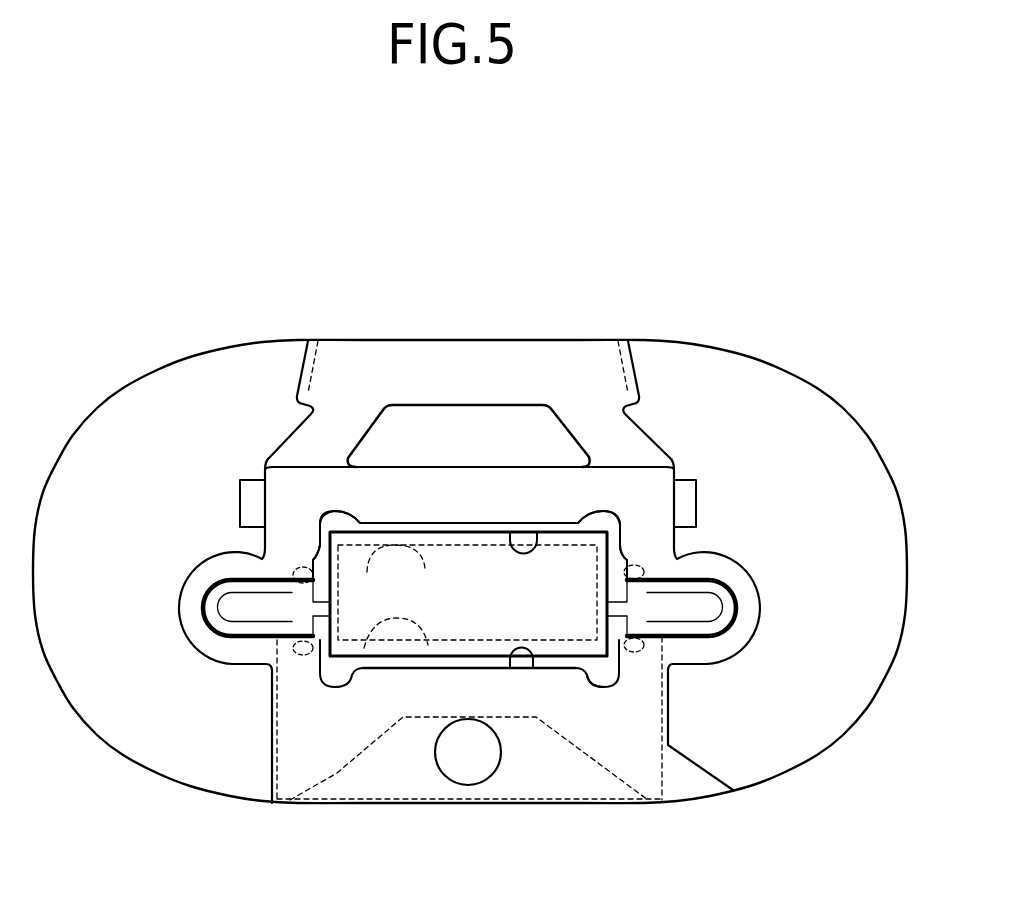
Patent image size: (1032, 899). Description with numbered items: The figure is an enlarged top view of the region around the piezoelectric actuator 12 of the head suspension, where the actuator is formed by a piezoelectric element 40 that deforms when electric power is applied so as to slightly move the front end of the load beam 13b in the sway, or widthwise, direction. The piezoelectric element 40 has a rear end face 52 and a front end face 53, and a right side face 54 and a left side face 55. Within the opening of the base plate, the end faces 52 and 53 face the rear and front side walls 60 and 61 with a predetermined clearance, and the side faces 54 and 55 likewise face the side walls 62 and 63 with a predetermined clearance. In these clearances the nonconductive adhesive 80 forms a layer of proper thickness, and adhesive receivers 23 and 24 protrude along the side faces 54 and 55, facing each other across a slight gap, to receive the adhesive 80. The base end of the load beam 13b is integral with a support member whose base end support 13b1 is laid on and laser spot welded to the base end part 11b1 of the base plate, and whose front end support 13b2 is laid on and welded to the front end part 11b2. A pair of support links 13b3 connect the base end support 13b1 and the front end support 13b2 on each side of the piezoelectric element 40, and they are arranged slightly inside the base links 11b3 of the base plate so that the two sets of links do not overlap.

The base end part 11b1 is at (669, 733).
The front end part 11b2 is at (587, 493).
The base links 11b3 is at (193, 590).
The piezoelectric actuator 12 is at (501, 512).
The load beam 13b is at (492, 380).
The base end support 13b1 is at (347, 673).
The front end support 13b2 is at (385, 545).
The support links 13b3 is at (215, 608).
The adhesive receiver 23 is at (290, 630).
The adhesive receiver 24 is at (295, 582).
The piezoelectric element 40 is at (488, 608).
The rear end face 52 is at (393, 663).
The front end face 53 is at (383, 530).
The side face 54 is at (618, 648).
The side face 55 is at (302, 654).
The rear side wall 60 is at (533, 658).
The front side wall 61 is at (538, 533).
The side wall 62 is at (621, 530).
The side wall 63 is at (322, 547).
The nonconductive adhesive 80 is at (608, 524).